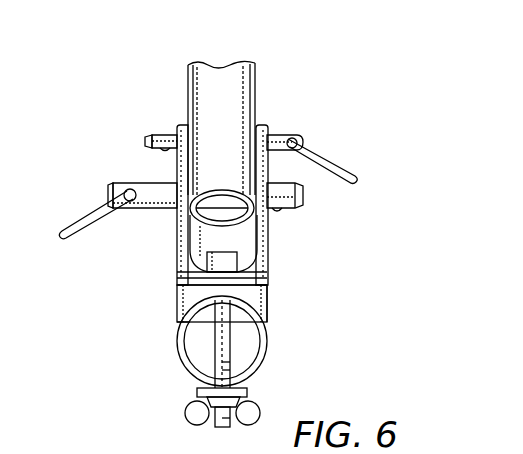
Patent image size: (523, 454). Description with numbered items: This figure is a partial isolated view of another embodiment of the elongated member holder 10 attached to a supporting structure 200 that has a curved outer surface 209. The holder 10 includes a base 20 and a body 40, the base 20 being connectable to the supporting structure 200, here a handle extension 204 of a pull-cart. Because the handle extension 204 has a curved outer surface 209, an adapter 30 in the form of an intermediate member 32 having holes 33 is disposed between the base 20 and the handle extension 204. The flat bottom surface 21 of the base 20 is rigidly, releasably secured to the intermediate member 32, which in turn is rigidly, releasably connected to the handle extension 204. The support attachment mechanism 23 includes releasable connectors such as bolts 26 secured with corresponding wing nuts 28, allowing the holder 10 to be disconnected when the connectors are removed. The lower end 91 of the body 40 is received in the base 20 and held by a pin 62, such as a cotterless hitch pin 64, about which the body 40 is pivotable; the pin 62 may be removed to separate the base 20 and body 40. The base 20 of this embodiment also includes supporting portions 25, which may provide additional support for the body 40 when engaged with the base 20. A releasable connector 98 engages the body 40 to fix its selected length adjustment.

The elongated member holder 10 is at (288, 98).
The base 20 is at (268, 168).
The flat bottom surface 21 is at (181, 295).
The support attachment mechanism 23 is at (348, 292).
The supporting portions 25 is at (202, 251).
The bolts 26 is at (237, 251).
The wing nuts 28 is at (190, 415).
The adapter 30 is at (170, 302).
The intermediate member 32 is at (177, 313).
The holes 33 is at (267, 293).
The body 40 is at (258, 75).
The pin 62 is at (108, 195).
The cotterless hitch pin 64 is at (110, 182).
The lower end of the first arm 91 is at (187, 78).
The releasable connector 98 is at (153, 133).
The supporting structure 200 is at (183, 375).
The handle extension 204 is at (272, 365).
The curved outer surface 209 is at (267, 340).